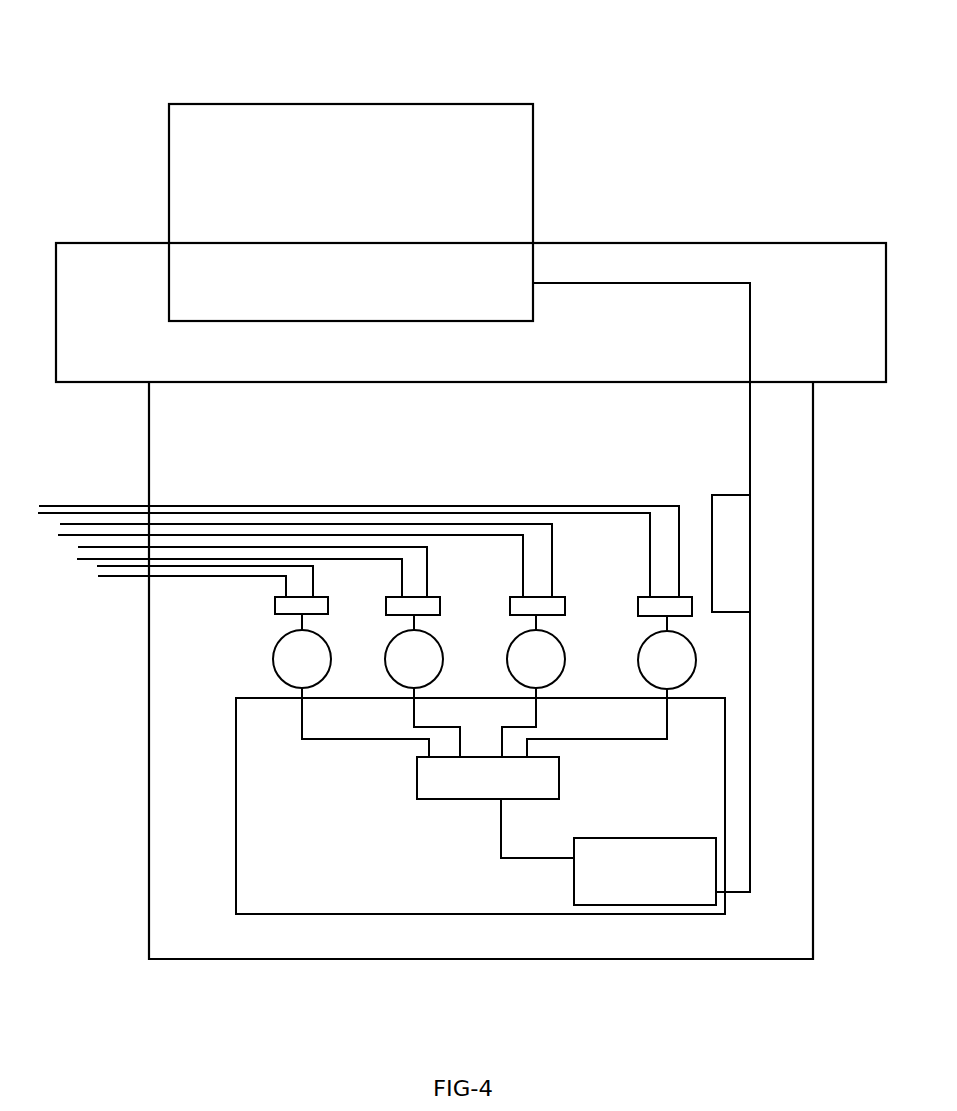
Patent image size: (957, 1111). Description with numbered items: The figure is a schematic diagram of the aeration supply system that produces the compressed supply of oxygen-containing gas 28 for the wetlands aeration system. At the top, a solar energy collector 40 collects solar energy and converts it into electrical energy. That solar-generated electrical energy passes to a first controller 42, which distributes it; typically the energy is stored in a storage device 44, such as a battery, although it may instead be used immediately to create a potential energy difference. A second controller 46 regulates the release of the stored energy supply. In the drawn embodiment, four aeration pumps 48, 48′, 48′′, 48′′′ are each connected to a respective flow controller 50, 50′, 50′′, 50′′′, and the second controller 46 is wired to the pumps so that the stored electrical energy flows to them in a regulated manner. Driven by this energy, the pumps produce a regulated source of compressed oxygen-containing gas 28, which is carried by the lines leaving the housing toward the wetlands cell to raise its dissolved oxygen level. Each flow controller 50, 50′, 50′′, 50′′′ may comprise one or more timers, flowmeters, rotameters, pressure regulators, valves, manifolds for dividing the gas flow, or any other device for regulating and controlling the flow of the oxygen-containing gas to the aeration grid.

The oxygen-containing gas supply 28 is at (790, 230).
The solar energy collector 40 is at (430, 93).
The first controller 42 is at (717, 480).
The storage device 44 is at (678, 825).
The second controller 46 is at (400, 782).
The aeration pump 48 is at (274, 650).
The aeration pump 48′ is at (386, 650).
The aeration pump 48′′ is at (508, 658).
The aeration pump 48′′′ is at (639, 658).
The flow controller 50 is at (275, 606).
The flow controller 50′ is at (386, 605).
The flow controller 50′′ is at (510, 605).
The flow controller 50′′′ is at (638, 607).